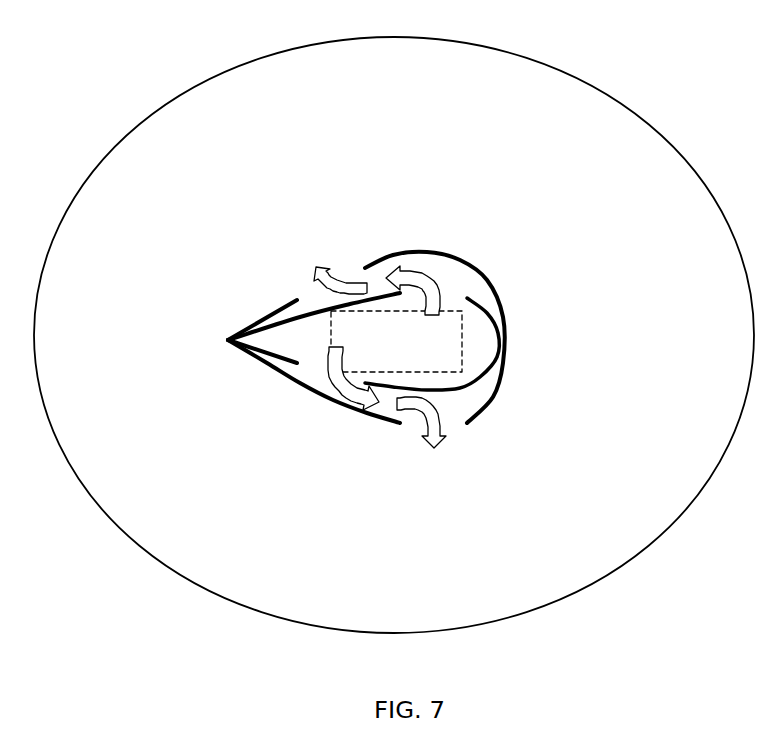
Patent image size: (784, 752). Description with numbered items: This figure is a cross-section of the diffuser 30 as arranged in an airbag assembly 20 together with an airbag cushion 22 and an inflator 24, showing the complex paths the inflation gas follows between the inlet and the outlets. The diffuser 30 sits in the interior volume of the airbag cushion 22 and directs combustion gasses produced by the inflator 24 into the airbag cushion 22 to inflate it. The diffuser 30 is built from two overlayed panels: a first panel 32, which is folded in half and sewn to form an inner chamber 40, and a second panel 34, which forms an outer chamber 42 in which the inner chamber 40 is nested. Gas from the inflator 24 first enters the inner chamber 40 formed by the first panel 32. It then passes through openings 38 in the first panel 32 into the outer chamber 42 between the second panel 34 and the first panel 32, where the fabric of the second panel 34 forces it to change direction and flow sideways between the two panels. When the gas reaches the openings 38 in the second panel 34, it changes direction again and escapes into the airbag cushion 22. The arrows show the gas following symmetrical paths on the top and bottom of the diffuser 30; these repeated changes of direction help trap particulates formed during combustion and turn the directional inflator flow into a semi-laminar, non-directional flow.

The airbag assembly 20 is at (168, 48).
The airbag cushion 22 is at (610, 95).
The inflator 24 is at (470, 347).
The diffuser 30 is at (282, 400).
The first panel 32 is at (458, 390).
The second panel 34 is at (270, 320).
The openings 38 is at (300, 288).
The inner chamber 40 is at (277, 345).
The outer chamber 42 is at (483, 292).